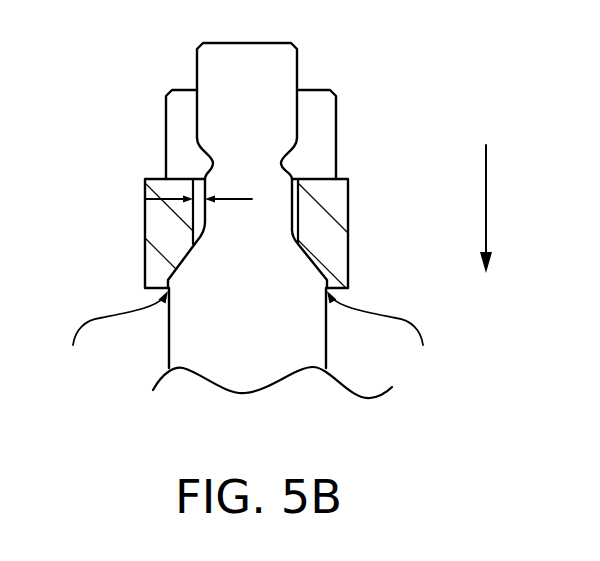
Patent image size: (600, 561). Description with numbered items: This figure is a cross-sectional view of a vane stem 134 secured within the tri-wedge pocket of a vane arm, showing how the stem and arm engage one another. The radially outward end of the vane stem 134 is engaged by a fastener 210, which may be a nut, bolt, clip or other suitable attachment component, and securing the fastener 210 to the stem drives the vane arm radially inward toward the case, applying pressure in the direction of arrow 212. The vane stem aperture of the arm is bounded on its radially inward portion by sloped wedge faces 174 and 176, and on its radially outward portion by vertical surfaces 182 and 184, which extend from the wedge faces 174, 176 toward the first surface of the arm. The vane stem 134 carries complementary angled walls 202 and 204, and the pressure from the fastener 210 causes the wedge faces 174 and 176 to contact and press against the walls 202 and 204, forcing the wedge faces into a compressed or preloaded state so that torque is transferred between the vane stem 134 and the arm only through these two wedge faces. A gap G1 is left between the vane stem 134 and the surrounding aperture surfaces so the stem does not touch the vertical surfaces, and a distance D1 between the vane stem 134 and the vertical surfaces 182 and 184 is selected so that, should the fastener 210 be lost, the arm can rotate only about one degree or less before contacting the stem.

The fastener 210 is at (317, 118).
The angled wall 202 is at (183, 261).
The angled wall 204 is at (312, 265).
The vertical surface 182 is at (203, 224).
The vertical surface 184 is at (295, 185).
The wedge face 174 is at (183, 261).
The wedge face 176 is at (321, 273).
The vane stem 134 is at (260, 363).
The arrow 212 is at (490, 198).
The distance D1 is at (158, 197).
The gap G1 is at (247, 332).